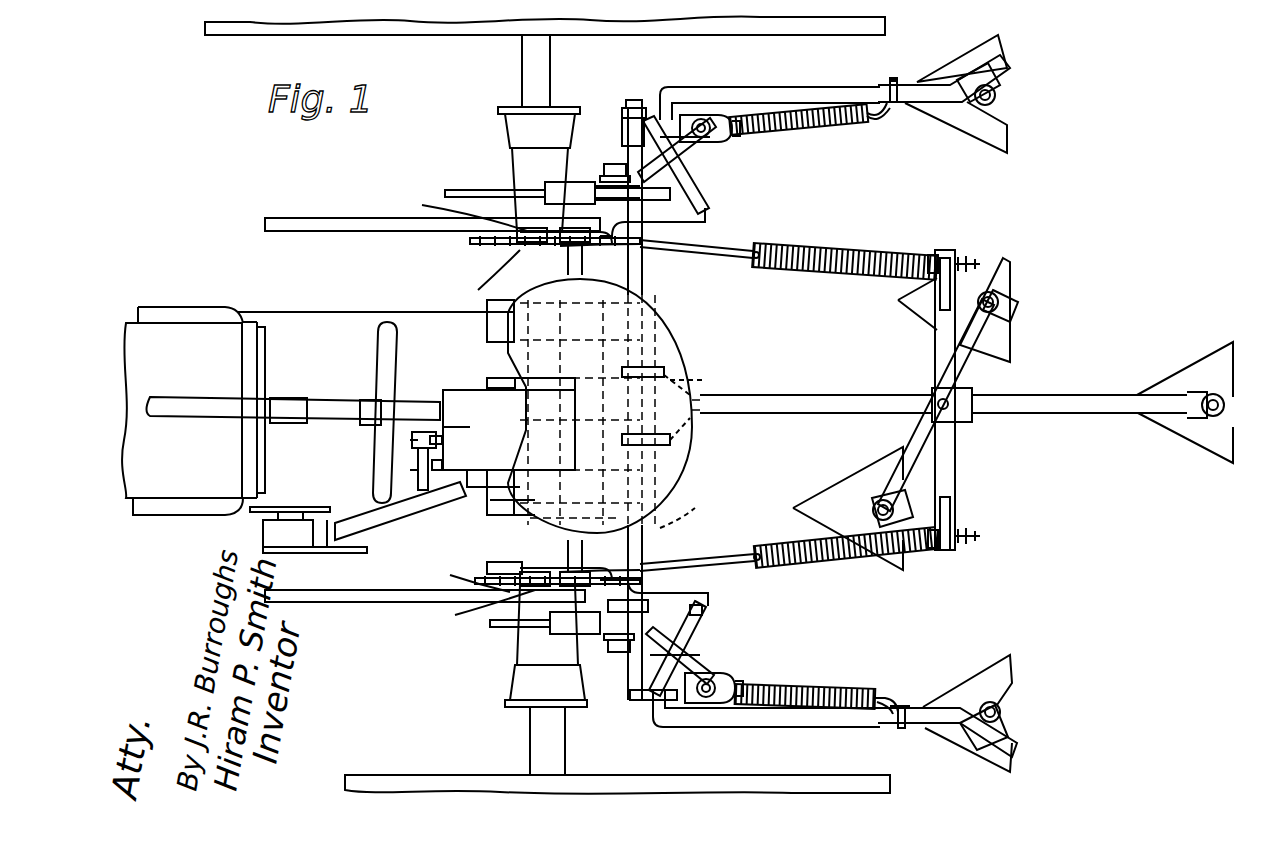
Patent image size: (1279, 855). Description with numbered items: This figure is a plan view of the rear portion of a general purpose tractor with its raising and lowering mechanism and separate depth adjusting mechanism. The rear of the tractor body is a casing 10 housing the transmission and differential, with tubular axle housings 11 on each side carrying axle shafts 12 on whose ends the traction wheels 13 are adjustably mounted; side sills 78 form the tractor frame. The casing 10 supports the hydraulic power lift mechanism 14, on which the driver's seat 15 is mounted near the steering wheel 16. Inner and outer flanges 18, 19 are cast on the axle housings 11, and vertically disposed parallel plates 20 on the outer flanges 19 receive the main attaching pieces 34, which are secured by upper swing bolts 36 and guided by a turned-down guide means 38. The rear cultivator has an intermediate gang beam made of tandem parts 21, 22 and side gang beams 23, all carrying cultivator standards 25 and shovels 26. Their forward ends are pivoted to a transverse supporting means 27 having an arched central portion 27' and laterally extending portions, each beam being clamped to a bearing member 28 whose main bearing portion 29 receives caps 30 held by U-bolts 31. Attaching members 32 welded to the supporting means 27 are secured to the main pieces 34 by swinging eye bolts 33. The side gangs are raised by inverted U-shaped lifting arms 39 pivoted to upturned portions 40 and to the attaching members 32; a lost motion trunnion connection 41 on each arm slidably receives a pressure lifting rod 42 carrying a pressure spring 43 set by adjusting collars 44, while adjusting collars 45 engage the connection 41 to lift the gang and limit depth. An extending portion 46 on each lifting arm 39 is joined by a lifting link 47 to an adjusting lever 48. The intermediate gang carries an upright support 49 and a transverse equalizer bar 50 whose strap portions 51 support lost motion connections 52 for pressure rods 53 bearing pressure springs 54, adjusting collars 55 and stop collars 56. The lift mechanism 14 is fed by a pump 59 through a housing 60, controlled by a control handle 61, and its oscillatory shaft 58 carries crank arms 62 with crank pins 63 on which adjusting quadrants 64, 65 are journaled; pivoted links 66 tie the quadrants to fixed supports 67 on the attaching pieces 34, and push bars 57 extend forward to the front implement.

The casing 10 is at (378, 310).
The tubular axle housings 11 is at (498, 108).
The axle shafts 12 is at (522, 50).
The traction wheels 13 is at (375, 40).
The power lift mechanism 14 is at (485, 430).
The driver's seat 15 is at (625, 296).
The steering wheel 16 is at (393, 325).
The inner flanges 18 is at (478, 242).
The outer flanges 19 is at (500, 648).
The parallel plates 20 is at (560, 182).
The intermediate gang beam part 21 is at (848, 414).
The intermediate gang beam part 22 is at (1028, 414).
The side gang beam 23 is at (785, 87).
The cultivator standards 25 is at (996, 95).
The cultivator shovels 26 is at (955, 72).
The transverse supporting means 27 is at (681, 509).
The downwardly arched central portion 27' is at (706, 383).
The bearing members 28 is at (622, 113).
The main bearing portion 29 is at (690, 140).
The caps 30 is at (618, 110).
The U-bolts 31 is at (652, 125).
The rear cultivator attaching members 32 is at (618, 165).
The swinging eye bolts 33 is at (640, 200).
The main attaching pieces 34 is at (545, 408).
The upper swing bolts 36 is at (698, 615).
The guide means 38 is at (570, 180).
The lifting arms 39 is at (742, 138).
The upturned portions 40 is at (630, 118).
The lost motion trunnion connection 41 is at (715, 118).
The pressure lifting rods 42 is at (895, 104).
The pressure springs 43 is at (820, 122).
The adjusting collars 44 is at (890, 82).
The adjusting collars 45 is at (705, 118).
The extending portion 46 is at (705, 185).
The lifting link 47 is at (705, 218).
The adjusting levers 48 is at (487, 322).
The upright support 49 is at (972, 390).
The transverse equalizer bar 50 is at (955, 478).
The strap portions 51 is at (948, 258).
The lost motion trunnion connections 52 is at (933, 256).
The pressure rods 53 is at (700, 260).
The pressure springs 54 is at (840, 278).
The adjusting collars 55 is at (745, 268).
The stop collars 56 is at (975, 258).
The push bars 57 is at (372, 231).
The oscillatory transverse output shaft 58 is at (540, 540).
The pump 59 is at (303, 553).
The housing or pipe 60 is at (410, 530).
The control handle 61 is at (415, 475).
The crank arms 62 is at (582, 250).
The crank pins 63 is at (560, 258).
The adjusting quadrant 64 is at (493, 273).
The adjusting quadrant 65 is at (465, 574).
The pivoted links 66 is at (463, 411).
The fixed support 67 is at (648, 250).
The side sills 78 is at (192, 305).